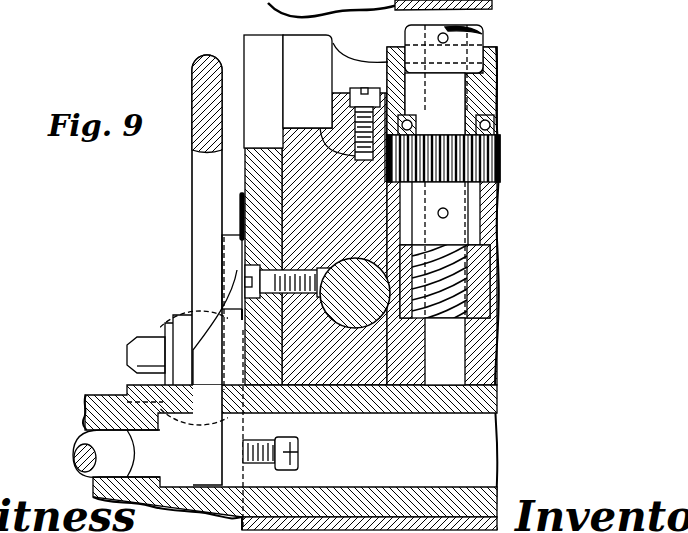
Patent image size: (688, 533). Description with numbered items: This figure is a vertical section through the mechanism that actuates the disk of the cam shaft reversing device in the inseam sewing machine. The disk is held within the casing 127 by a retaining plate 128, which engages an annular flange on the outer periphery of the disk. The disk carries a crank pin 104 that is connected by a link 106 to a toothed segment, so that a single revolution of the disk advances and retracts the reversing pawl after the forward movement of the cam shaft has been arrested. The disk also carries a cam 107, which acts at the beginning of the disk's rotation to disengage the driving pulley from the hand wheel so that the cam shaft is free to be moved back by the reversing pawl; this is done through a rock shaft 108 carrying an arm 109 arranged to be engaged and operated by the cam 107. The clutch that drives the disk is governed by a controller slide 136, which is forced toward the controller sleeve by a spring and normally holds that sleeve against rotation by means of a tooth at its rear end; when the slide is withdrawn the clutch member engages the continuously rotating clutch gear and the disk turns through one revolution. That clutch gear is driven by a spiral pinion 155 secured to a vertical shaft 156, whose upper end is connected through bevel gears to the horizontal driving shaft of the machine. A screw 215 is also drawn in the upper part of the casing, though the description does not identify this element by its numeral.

The crank pin 104 is at (127, 360).
The link 106 is at (193, 171).
The cam 107 is at (233, 201).
The rock shaft 108 is at (132, 406).
The arm 109 is at (233, 261).
The casing 127 is at (322, 51).
The retaining plate 128 is at (267, 52).
The controller slide 136 is at (355, 340).
The spiral pinion 155 is at (450, 262).
The vertical shaft 156 is at (458, 91).
The adjusting screw 215 is at (350, 157).